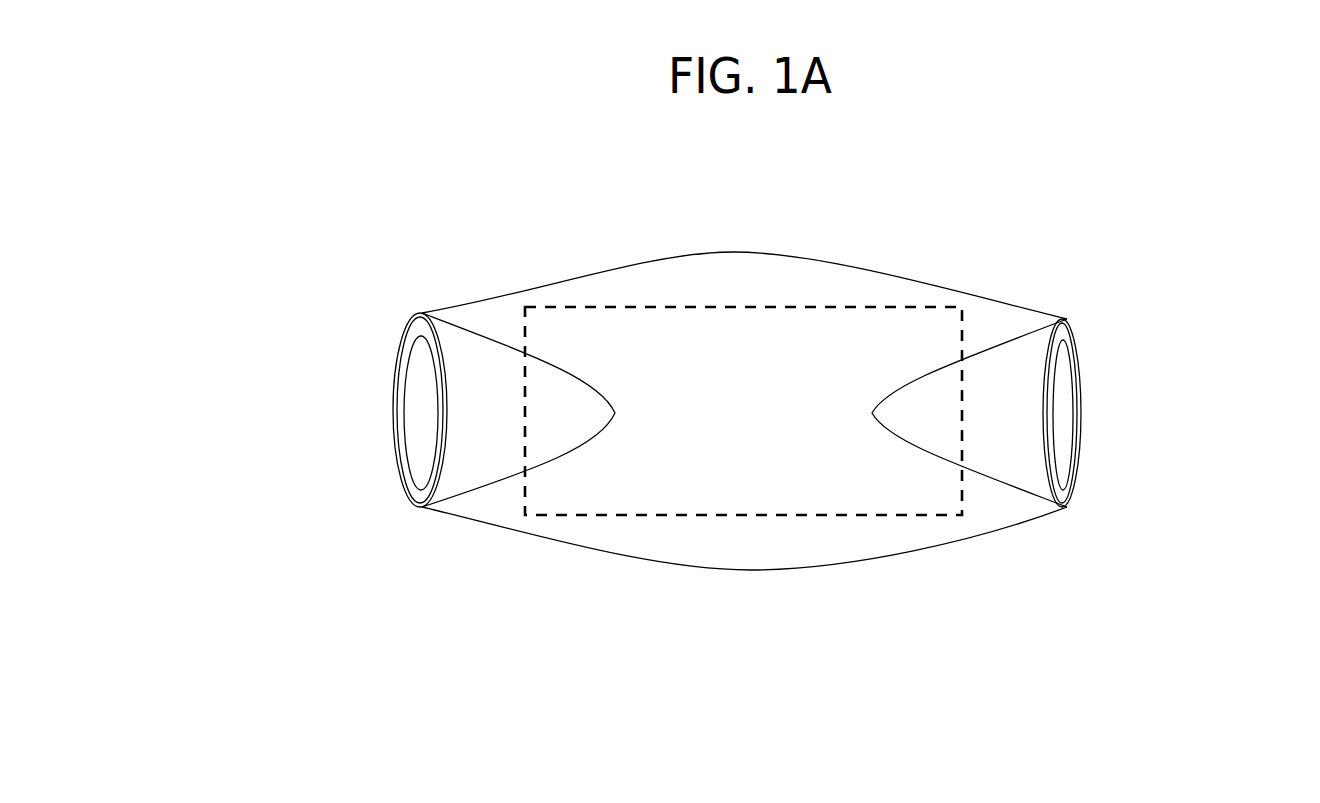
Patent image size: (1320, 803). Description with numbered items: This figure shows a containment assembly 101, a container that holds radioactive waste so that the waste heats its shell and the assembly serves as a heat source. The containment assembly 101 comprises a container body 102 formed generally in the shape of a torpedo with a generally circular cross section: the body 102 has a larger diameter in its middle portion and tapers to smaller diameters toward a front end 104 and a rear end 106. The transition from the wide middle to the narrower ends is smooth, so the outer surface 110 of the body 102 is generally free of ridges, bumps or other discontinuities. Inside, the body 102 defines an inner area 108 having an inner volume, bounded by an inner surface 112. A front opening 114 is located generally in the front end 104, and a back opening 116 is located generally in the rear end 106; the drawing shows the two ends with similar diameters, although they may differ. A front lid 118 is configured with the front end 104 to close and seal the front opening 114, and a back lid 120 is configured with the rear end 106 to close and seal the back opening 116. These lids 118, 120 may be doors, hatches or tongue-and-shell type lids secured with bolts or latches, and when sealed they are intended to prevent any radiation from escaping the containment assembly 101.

The containment assembly 101 is at (1018, 175).
The container body 102 is at (648, 265).
The front end 104 is at (1080, 423).
The rear end 106 is at (395, 422).
The inner area 108 is at (623, 355).
The outer surface 110 is at (787, 282).
The inner surface 112 is at (805, 515).
The front opening 114 is at (1133, 398).
The back opening 116 is at (342, 402).
The front lid 118 is at (1062, 398).
The back lid 120 is at (420, 412).